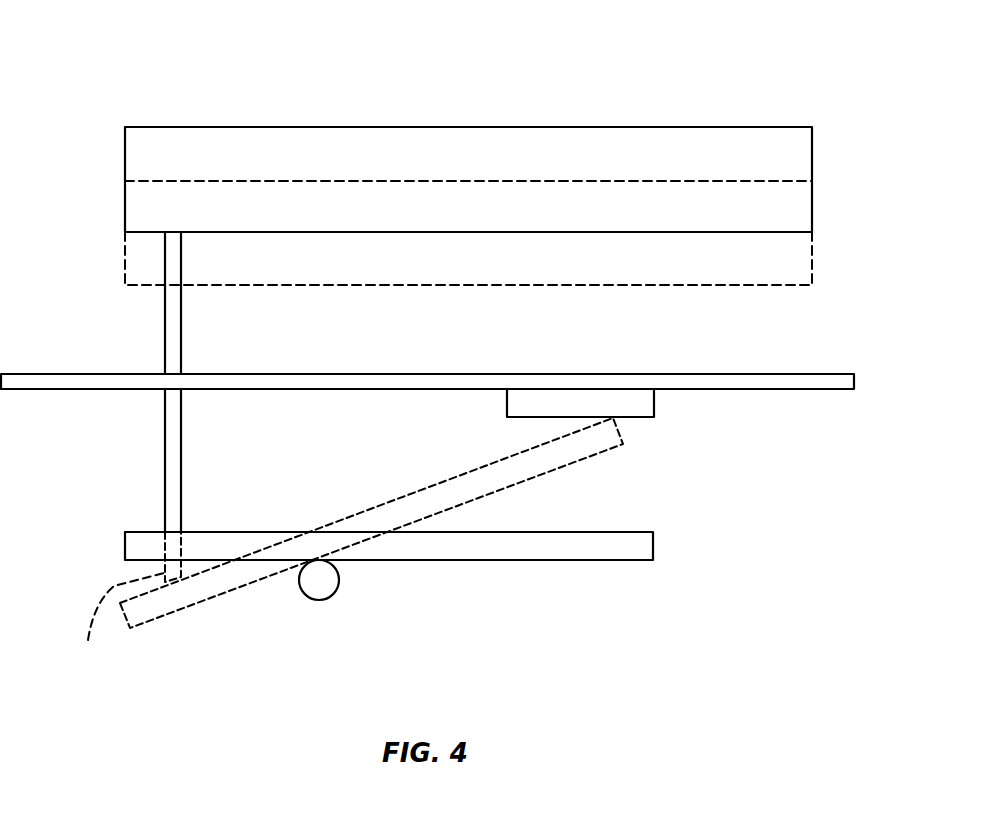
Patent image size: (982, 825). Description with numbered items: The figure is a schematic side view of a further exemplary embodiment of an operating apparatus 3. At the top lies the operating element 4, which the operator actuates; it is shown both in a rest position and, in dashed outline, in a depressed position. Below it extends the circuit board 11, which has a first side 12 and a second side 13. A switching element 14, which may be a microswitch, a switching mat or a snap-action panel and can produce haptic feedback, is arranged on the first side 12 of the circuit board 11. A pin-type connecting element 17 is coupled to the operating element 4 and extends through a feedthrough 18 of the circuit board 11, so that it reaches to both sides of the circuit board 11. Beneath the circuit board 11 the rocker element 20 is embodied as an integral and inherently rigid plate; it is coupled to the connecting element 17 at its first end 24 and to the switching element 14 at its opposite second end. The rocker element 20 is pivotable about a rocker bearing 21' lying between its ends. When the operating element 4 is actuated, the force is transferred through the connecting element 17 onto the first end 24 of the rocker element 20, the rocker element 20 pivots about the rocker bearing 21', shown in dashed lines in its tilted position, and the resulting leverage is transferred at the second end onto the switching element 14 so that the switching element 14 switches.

The operating apparatus 3 is at (545, 78).
The operating element 4 is at (631, 140).
The circuit board 11 is at (735, 380).
The first side 12 is at (331, 373).
The second side 13 is at (301, 389).
The switching element 14 is at (630, 418).
The connecting element 17 is at (164, 327).
The feedthrough 18 is at (175, 368).
The rocker element 20 is at (398, 487).
The rocker bearing 21' is at (324, 616).
The first end 24 is at (120, 568).